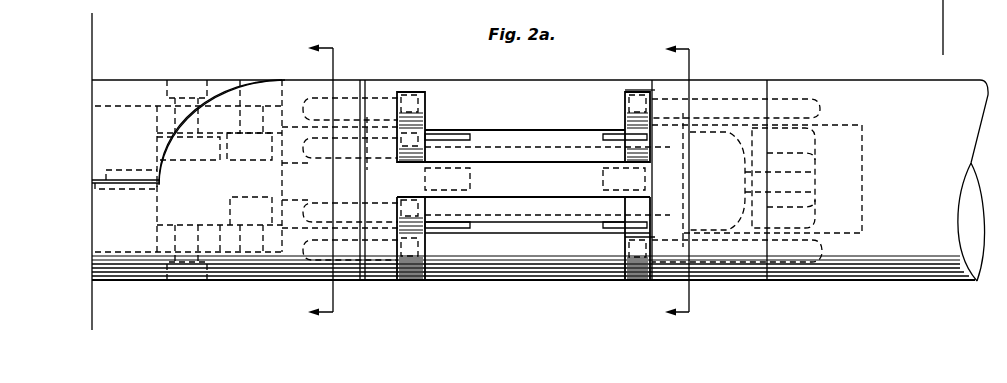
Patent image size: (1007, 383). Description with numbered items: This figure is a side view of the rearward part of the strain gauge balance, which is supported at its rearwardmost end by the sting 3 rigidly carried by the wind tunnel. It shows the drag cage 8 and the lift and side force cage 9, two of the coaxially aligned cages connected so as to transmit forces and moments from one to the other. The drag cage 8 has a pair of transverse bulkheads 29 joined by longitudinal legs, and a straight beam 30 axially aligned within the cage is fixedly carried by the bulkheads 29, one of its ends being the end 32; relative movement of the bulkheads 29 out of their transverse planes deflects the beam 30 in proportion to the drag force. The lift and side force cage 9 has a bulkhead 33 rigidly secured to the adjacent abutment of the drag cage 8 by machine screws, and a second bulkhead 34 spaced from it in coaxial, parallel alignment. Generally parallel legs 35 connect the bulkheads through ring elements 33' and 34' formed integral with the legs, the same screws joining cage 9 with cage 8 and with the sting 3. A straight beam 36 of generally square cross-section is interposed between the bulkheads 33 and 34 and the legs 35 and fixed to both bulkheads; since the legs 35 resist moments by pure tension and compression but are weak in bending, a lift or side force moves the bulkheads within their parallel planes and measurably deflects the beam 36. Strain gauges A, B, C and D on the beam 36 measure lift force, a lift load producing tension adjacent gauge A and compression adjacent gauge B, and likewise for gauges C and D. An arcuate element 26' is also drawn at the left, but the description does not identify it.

The sting 3 is at (915, 267).
The drag cage 8 is at (128, 300).
The lift and side force cage 9 is at (430, 293).
The arcuate guide 26' is at (226, 116).
The transverse bulkheads 29 is at (220, 183).
The straight beam 30 is at (100, 167).
The end of straight beam 32 is at (158, 180).
The bulkhead 33 is at (369, 166).
The ring element 33' is at (416, 167).
The bulkhead 34 is at (757, 159).
The ring element 34' is at (613, 102).
The legs 35 is at (563, 88).
The straight beam 36 is at (532, 215).
The strain gauge A is at (465, 137).
The strain gauge B is at (608, 137).
The strain gauge C is at (463, 227).
The strain gauge D is at (611, 227).